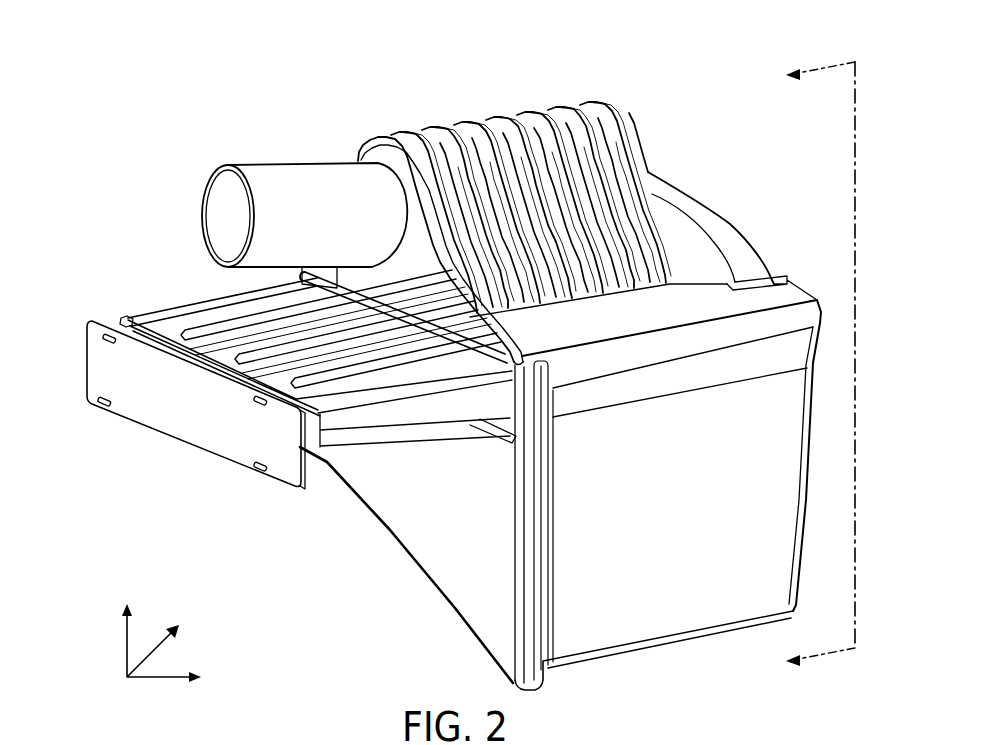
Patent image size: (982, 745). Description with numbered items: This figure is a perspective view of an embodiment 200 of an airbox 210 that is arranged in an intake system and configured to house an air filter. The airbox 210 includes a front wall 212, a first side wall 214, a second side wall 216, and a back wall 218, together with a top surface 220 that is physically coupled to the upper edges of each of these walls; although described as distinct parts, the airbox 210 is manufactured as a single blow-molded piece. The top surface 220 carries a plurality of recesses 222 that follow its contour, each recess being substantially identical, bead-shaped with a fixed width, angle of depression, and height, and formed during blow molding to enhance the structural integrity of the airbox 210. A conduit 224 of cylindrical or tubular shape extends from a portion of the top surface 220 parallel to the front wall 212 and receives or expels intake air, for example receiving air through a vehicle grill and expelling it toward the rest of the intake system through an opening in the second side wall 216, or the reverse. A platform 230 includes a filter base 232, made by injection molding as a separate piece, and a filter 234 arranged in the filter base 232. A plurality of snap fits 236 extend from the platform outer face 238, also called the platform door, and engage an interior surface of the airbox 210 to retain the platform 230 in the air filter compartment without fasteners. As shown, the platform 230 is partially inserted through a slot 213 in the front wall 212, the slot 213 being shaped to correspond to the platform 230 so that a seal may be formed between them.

The embodiment 200 is at (716, 82).
The airbox 210 is at (650, 94).
The front wall 212 is at (435, 593).
The slot 213 is at (500, 428).
The first side wall 214 is at (718, 630).
The second side wall 216 is at (210, 125).
The back wall 218 is at (875, 364).
The top surface 220 is at (422, 112).
The plurality of recesses 222 is at (612, 176).
The conduit 224 is at (221, 165).
The platform 230 is at (105, 456).
The filter base 232 is at (370, 403).
The filter 234 is at (177, 308).
The plurality of snap fits 236 is at (127, 320).
The platform outer face 238 is at (193, 447).